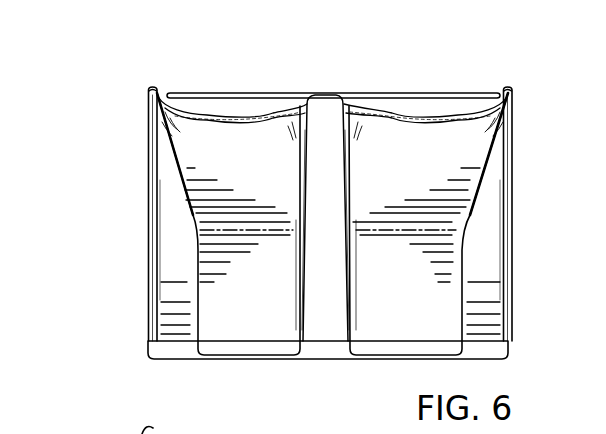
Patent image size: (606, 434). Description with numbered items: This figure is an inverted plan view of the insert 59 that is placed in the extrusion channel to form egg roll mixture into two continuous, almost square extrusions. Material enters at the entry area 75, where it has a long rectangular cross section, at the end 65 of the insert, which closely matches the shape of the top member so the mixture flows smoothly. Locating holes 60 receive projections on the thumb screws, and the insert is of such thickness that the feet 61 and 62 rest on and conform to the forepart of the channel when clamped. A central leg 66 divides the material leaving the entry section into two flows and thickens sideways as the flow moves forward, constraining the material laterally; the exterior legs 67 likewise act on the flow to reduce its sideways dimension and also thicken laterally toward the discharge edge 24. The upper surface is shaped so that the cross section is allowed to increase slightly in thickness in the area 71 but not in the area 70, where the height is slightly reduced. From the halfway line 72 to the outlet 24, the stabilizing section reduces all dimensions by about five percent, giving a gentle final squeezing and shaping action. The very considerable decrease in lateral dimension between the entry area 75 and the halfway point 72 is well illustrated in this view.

The insert 59 is at (116, 222).
The discharge edge 24 is at (316, 360).
The exterior legs 67 is at (147, 249).
The locating holes 60 is at (157, 93).
The foot 61 is at (163, 177).
The entry area 75 is at (236, 93).
The foot 62 is at (332, 110).
The end of insert 65 is at (302, 98).
The leg 66 is at (331, 292).
The area 71 is at (292, 130).
The area 70 is at (182, 135).
The line 72 is at (237, 217).